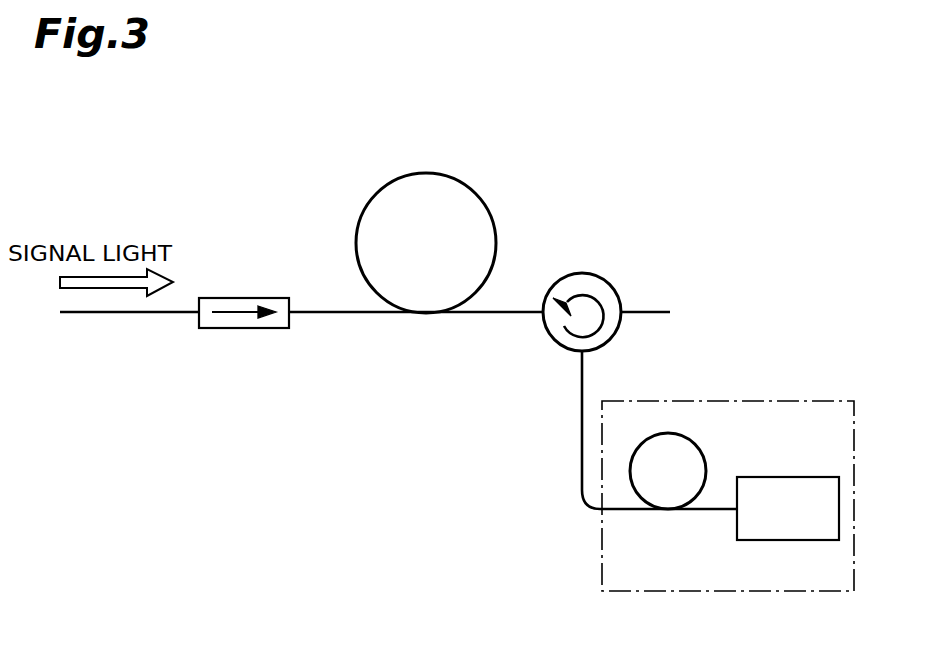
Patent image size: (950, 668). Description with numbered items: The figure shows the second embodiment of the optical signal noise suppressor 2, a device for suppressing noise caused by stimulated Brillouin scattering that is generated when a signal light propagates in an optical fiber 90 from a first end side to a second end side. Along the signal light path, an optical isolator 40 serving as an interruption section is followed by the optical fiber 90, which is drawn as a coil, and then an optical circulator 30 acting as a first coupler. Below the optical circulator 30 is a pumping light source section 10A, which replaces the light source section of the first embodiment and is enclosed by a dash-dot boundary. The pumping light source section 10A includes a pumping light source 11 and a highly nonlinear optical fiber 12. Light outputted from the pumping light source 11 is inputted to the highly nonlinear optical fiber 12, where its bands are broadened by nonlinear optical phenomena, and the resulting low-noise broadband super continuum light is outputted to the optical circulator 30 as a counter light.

The optical signal noise suppressor 2 is at (646, 77).
The pumping light source section 10A is at (826, 592).
The pumping light source 11 is at (790, 541).
The highly nonlinear optical fiber 12 is at (704, 448).
The optical circulator 30 is at (586, 273).
The optical isolator 40 is at (246, 298).
The optical fiber 90 is at (477, 185).